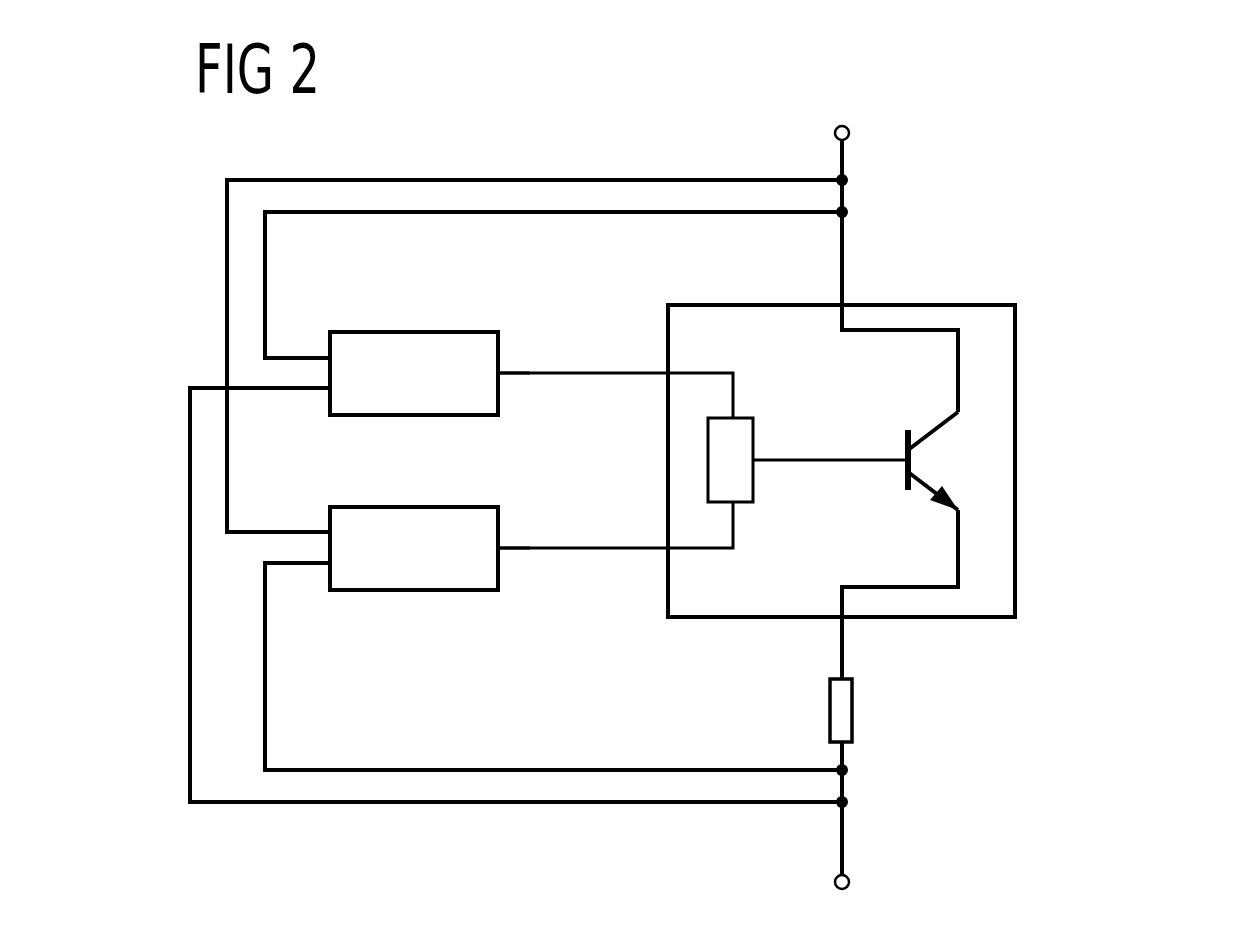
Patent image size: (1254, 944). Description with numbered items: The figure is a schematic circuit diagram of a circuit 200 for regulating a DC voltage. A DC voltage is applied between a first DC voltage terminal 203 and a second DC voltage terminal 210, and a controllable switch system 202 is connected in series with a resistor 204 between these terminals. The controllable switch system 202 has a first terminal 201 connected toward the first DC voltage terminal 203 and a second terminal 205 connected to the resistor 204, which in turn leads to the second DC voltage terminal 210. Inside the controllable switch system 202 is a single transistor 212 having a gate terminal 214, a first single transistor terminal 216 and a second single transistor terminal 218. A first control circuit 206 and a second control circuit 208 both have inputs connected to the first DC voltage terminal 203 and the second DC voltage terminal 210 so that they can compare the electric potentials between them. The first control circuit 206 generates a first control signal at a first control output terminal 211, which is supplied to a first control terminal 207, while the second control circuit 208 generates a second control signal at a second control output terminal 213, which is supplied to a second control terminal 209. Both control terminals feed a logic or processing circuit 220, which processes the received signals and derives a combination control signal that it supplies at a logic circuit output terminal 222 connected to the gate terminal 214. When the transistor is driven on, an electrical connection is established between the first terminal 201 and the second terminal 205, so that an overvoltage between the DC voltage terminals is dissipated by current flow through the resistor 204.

The circuit for regulating a DC voltage 200 is at (1050, 236).
The first terminal 201 is at (850, 300).
The controllable switch system 202 is at (1018, 392).
The first DC voltage terminal 203 is at (849, 133).
The resistor 204 is at (853, 710).
The second terminal 205 is at (845, 620).
The first control circuit 206 is at (415, 332).
The first control terminal 207 is at (663, 378).
The second control circuit 208 is at (413, 590).
The second control terminal 209 is at (663, 553).
The second DC voltage terminal 210 is at (849, 882).
The first control output terminal 211 is at (503, 371).
The single transistor 212 is at (961, 461).
The second control output terminal 213 is at (503, 546).
The gate terminal 214 is at (905, 470).
The first single transistor terminal 216 is at (955, 382).
The second single transistor terminal 218 is at (955, 540).
The logic or processing circuit 220 is at (745, 415).
The logic circuit output terminal 222 is at (762, 458).